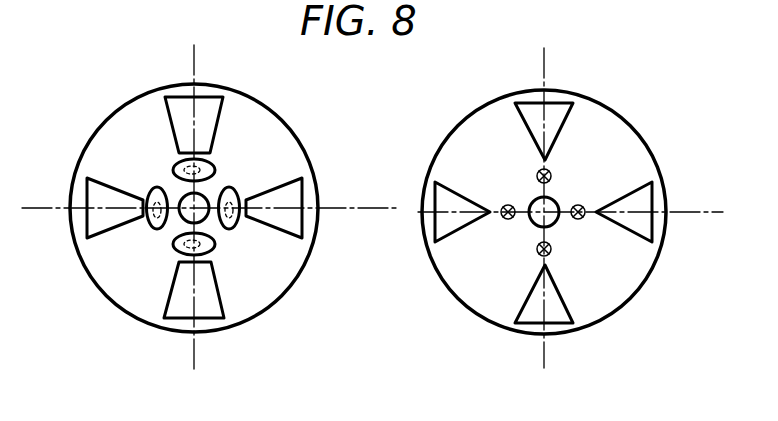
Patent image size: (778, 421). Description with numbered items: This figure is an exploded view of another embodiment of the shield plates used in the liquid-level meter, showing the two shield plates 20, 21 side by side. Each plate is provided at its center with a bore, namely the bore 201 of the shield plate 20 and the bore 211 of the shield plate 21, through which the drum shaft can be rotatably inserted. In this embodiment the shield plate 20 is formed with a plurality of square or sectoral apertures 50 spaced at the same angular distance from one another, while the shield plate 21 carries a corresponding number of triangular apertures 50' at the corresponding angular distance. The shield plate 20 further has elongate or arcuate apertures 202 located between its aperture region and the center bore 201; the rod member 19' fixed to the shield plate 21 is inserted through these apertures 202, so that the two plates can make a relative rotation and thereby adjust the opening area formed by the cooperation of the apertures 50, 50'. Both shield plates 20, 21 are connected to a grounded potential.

The shield plate 20 is at (135, 298).
The bore 201 is at (204, 221).
The elongate or arcuate aperture 202 is at (216, 172).
The square or sectoral apertures 50 is at (195, 209).
The rod member 19' is at (387, 162).
The shield plate 21 is at (463, 282).
The bore 211 is at (550, 223).
The triangular apertures 50' is at (561, 215).